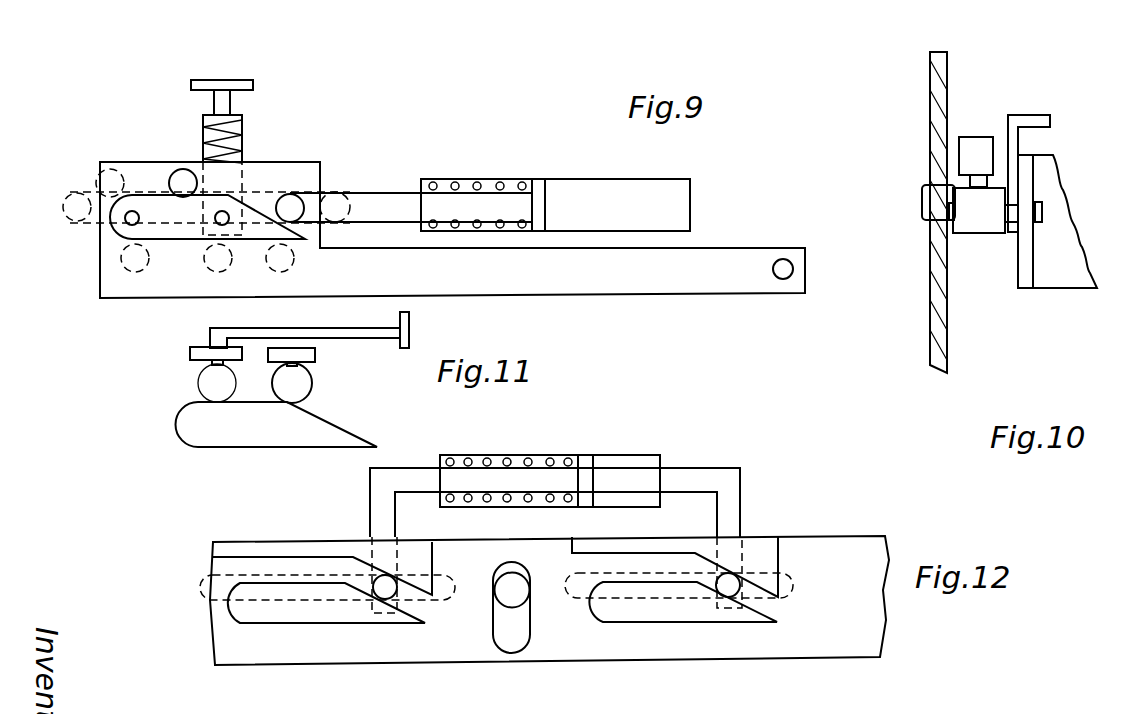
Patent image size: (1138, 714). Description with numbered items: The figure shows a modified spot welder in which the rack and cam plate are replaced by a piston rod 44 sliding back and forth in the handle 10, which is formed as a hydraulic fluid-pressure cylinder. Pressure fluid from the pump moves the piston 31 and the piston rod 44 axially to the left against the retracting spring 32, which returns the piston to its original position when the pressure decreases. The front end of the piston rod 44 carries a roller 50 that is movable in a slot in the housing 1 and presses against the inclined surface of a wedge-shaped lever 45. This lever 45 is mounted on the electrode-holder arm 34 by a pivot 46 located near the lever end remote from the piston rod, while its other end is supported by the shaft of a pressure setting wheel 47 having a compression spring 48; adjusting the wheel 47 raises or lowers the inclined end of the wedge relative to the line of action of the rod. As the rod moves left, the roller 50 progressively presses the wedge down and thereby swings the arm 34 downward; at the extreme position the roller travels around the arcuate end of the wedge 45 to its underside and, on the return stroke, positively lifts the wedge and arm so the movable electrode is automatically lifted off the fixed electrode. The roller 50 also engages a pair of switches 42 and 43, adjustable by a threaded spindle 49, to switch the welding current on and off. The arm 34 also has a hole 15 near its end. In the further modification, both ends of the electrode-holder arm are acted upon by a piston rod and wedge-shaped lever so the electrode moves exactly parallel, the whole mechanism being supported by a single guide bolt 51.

In FIG. 10, the housing 1 is at (938, 322).
In FIG. 9, the handle 10 is at (681, 203).
In FIG. 12, the handle 10 is at (640, 458).
In FIG. 9, the hole 15 is at (782, 279).
In FIG. 9, the piston 31 is at (542, 198).
In FIG. 12, the piston 31 is at (583, 457).
In FIG. 9, the retracting spring 32 is at (500, 182).
In FIG. 12, the retracting spring 32 is at (470, 462).
In FIG. 9, the electrode-holder arm 34 is at (564, 284).
In FIG. 11, the switch 42 is at (190, 357).
In FIG. 10, the switch 42 is at (978, 147).
In FIG. 11, the switch 43 is at (315, 353).
In FIG. 9, the piston rod 44 is at (375, 203).
In FIG. 12, the piston rod 44 is at (408, 477).
In FIG. 9, the wedge-shaped lever 45 is at (160, 236).
In FIG. 11, the wedge-shaped lever 45 is at (238, 437).
In FIG. 12, the wedge-shaped lever 45 is at (241, 618).
In FIG. 10, the wedge-shaped lever 45 is at (977, 228).
In FIG. 9, the pivot 46 is at (132, 210).
In FIG. 10, the pivot 46 is at (1045, 207).
In FIG. 9, the pressure setting wheel 47 is at (253, 85).
In FIG. 9, the compression spring 48 is at (203, 137).
In FIG. 11, the threaded spindle 49 is at (373, 327).
In FIG. 9, the roller 50 is at (281, 223).
In FIG. 11, the roller 50 is at (303, 395).
In FIG. 12, the roller 50 is at (556, 586).
In FIG. 10, the roller 50 is at (933, 200).
In FIG. 12, the guide bolt 51 is at (508, 605).